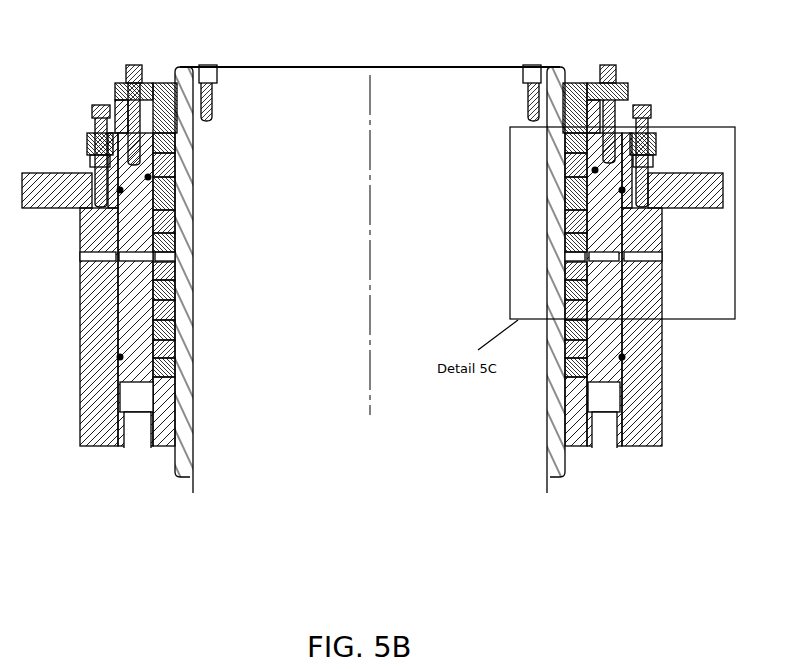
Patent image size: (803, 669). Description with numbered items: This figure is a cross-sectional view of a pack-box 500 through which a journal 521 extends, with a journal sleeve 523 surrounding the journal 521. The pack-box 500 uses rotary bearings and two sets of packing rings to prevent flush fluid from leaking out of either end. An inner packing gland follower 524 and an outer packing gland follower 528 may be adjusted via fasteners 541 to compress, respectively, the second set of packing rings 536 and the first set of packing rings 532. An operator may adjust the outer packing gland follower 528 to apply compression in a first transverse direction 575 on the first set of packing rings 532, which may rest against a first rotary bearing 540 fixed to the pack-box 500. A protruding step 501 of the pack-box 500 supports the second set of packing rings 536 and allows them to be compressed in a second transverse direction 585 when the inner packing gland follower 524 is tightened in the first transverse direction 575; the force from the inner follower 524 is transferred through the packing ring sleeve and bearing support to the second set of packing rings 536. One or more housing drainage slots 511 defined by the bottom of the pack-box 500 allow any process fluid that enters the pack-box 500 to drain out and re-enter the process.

The pack-box 500 is at (665, 452).
The protruding step 501 is at (598, 383).
The housing drainage slot 511 is at (610, 452).
The journal 521 is at (320, 93).
The journal sleeve 523 is at (557, 67).
The inner packing gland follower 524 is at (92, 382).
The outer packing gland follower 528 is at (630, 80).
The first set of packing rings 532 is at (176, 205).
The second set of packing rings 536 is at (176, 365).
The first rotary bearing 540 is at (92, 168).
The fasteners 541 is at (130, 67).
The first transverse direction 575 is at (748, 142).
The second transverse direction 585 is at (748, 250).